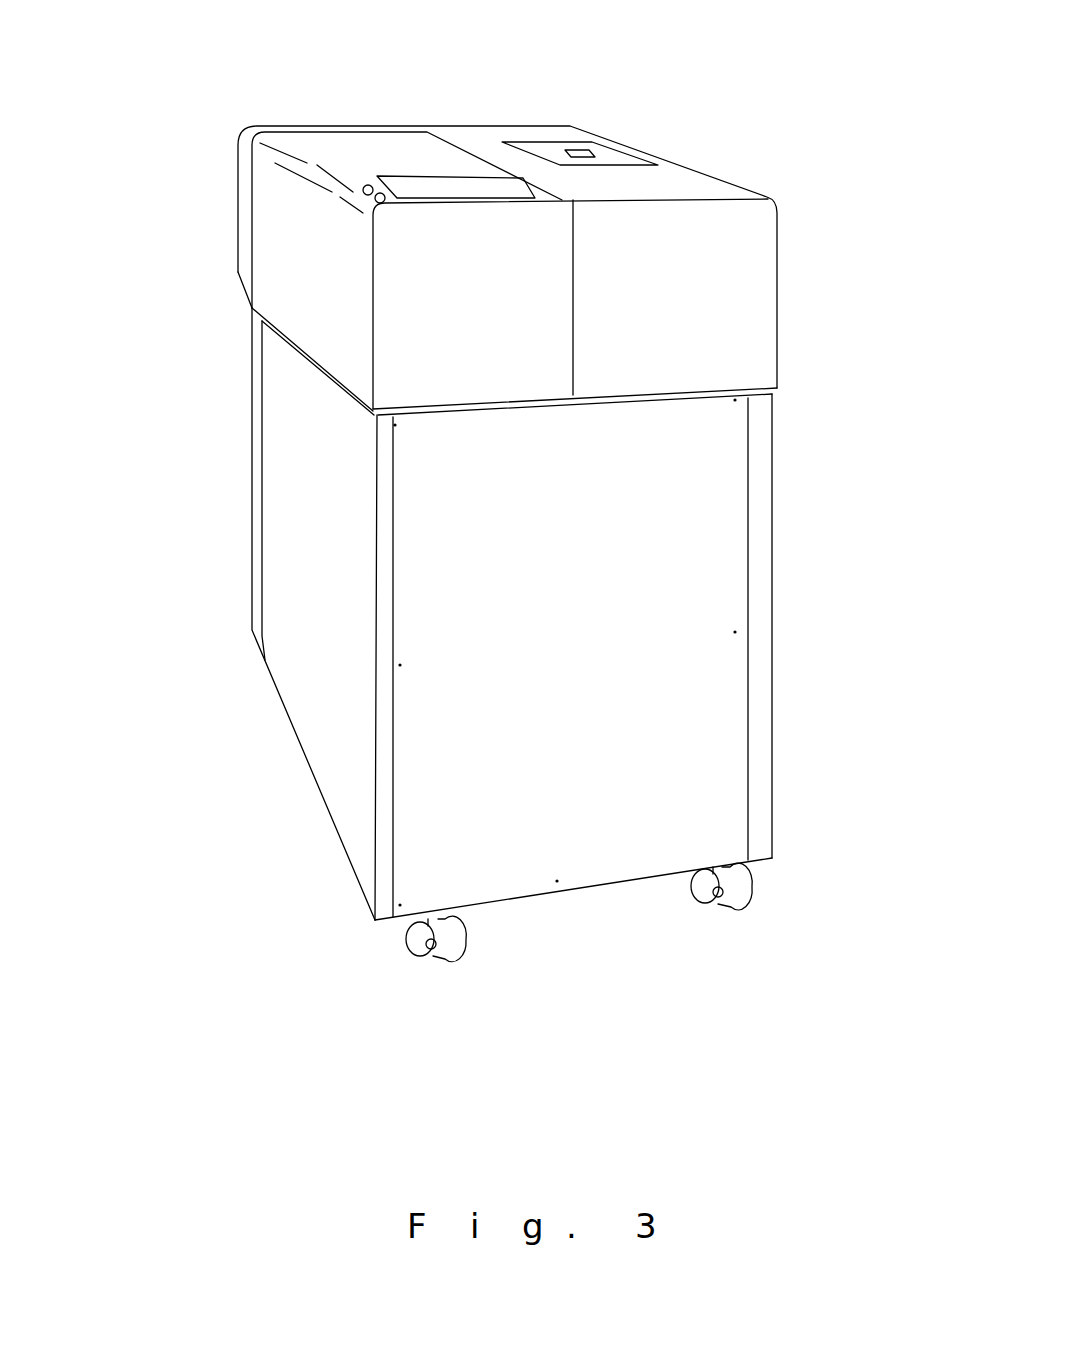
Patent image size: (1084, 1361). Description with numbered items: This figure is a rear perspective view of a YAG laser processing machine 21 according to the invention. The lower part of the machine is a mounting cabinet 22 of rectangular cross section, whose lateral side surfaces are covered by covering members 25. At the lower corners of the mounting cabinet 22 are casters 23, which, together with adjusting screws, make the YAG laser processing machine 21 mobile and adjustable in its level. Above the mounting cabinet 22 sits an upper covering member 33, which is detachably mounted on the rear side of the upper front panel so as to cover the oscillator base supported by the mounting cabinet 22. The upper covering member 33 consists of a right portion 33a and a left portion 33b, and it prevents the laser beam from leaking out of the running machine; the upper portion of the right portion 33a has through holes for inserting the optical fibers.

The YAG laser processing machine 21 is at (497, 518).
The mounting cabinet 22 is at (540, 668).
The casters 23 is at (417, 950).
The covering members 25 is at (304, 642).
The upper covering member 33 is at (497, 211).
The right portion 33a is at (302, 282).
The left portion 33b is at (707, 183).